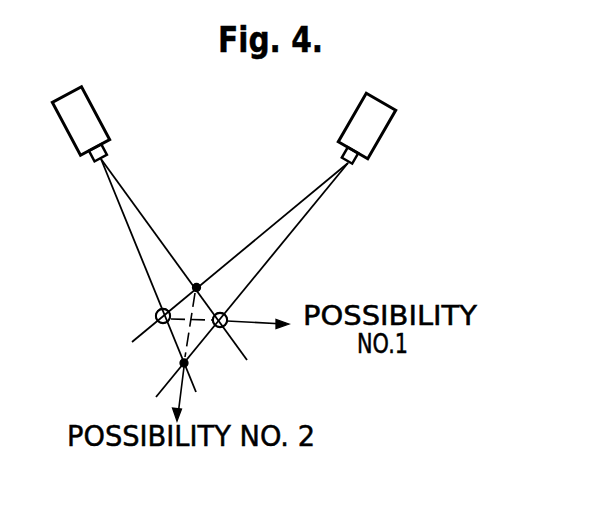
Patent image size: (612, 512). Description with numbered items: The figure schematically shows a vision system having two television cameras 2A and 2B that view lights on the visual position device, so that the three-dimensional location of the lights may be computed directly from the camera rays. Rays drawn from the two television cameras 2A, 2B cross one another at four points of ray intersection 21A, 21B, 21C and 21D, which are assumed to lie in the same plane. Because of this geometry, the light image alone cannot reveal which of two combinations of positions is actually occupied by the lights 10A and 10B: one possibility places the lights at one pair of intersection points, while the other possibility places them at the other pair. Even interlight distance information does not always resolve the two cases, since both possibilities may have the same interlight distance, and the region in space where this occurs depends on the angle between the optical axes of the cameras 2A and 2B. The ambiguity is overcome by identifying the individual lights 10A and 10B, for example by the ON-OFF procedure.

The television camera 2A is at (97, 123).
The television camera 2B is at (358, 120).
The light 10A is at (155, 317).
The light 10B is at (226, 327).
The point of ray intersection 21A is at (196, 283).
The point of ray intersection 21B is at (226, 315).
The point of ray intersection 21C is at (180, 365).
The point of ray intersection 21D is at (157, 311).